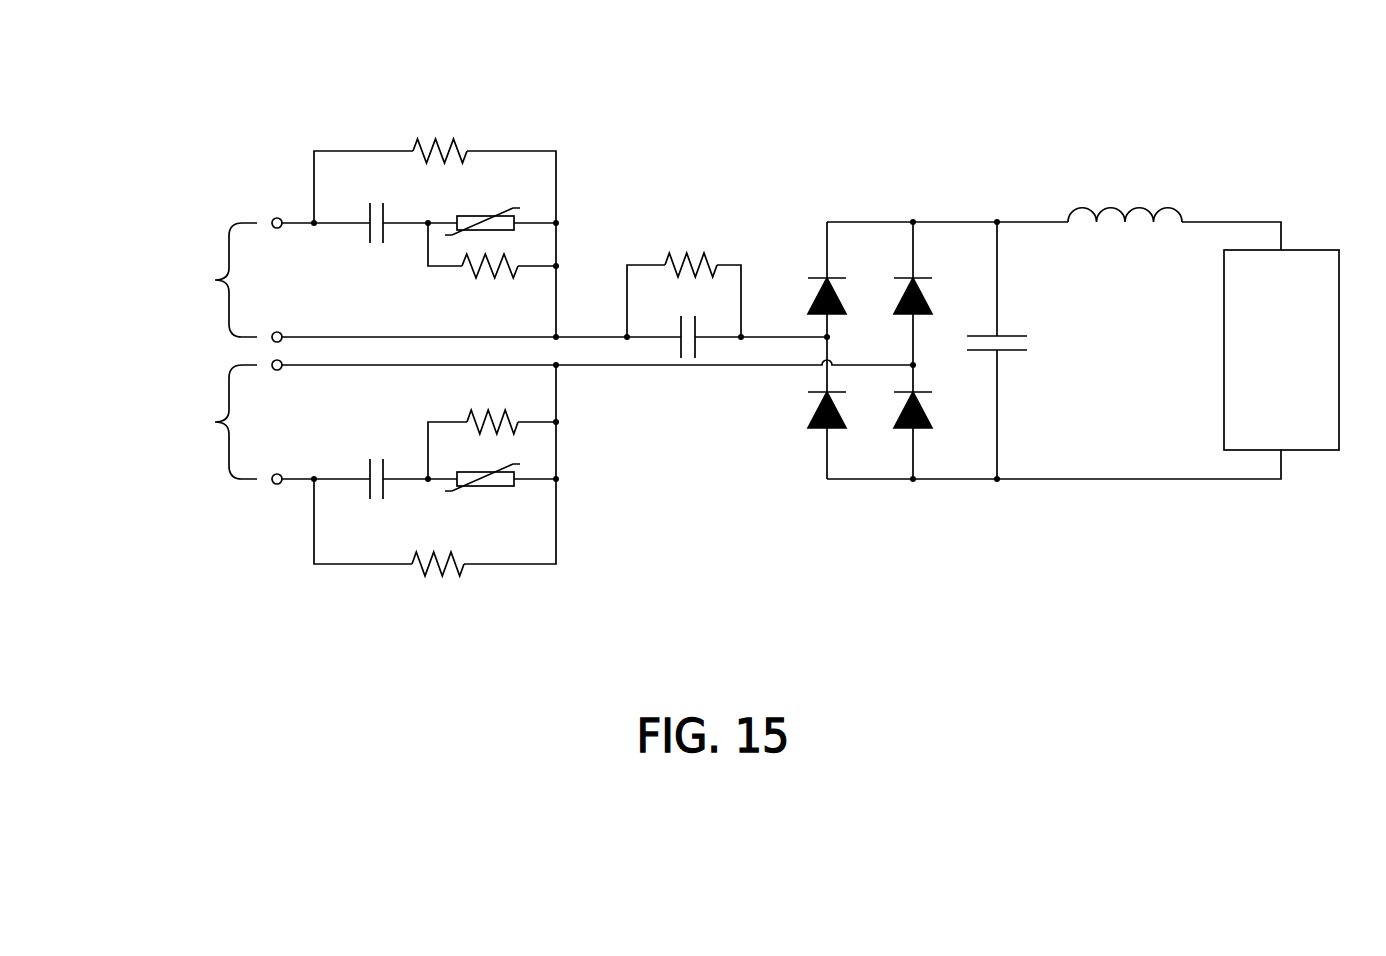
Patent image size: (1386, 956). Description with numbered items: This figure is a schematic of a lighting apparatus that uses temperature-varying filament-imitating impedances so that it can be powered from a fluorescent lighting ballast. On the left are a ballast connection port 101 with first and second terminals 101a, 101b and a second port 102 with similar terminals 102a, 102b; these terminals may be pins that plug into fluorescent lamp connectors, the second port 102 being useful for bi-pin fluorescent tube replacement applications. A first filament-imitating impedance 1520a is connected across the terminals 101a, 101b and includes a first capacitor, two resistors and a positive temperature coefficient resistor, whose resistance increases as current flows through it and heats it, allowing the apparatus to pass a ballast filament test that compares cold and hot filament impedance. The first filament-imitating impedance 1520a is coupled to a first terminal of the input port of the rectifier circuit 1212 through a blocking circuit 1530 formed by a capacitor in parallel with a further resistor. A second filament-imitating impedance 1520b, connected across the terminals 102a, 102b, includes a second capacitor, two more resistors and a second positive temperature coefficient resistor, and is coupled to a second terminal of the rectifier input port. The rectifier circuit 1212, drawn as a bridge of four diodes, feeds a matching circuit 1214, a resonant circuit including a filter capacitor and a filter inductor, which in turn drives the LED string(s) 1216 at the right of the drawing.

The ballast connection port 101 is at (215, 280).
The first terminal 101a is at (290, 244).
The second terminal 101b is at (292, 316).
The second port 102 is at (215, 422).
The first terminal of second port 102a is at (288, 387).
The second terminal of second port 102b is at (290, 459).
The first filament-imitating impedance 1520a is at (592, 100).
The second filament-imitating impedance 1520b is at (583, 597).
The blocking circuit 1530 is at (712, 212).
The rectifier circuit 1212 is at (883, 188).
The matching circuit 1214 is at (1173, 176).
The LED string(s) 1216 is at (1224, 349).